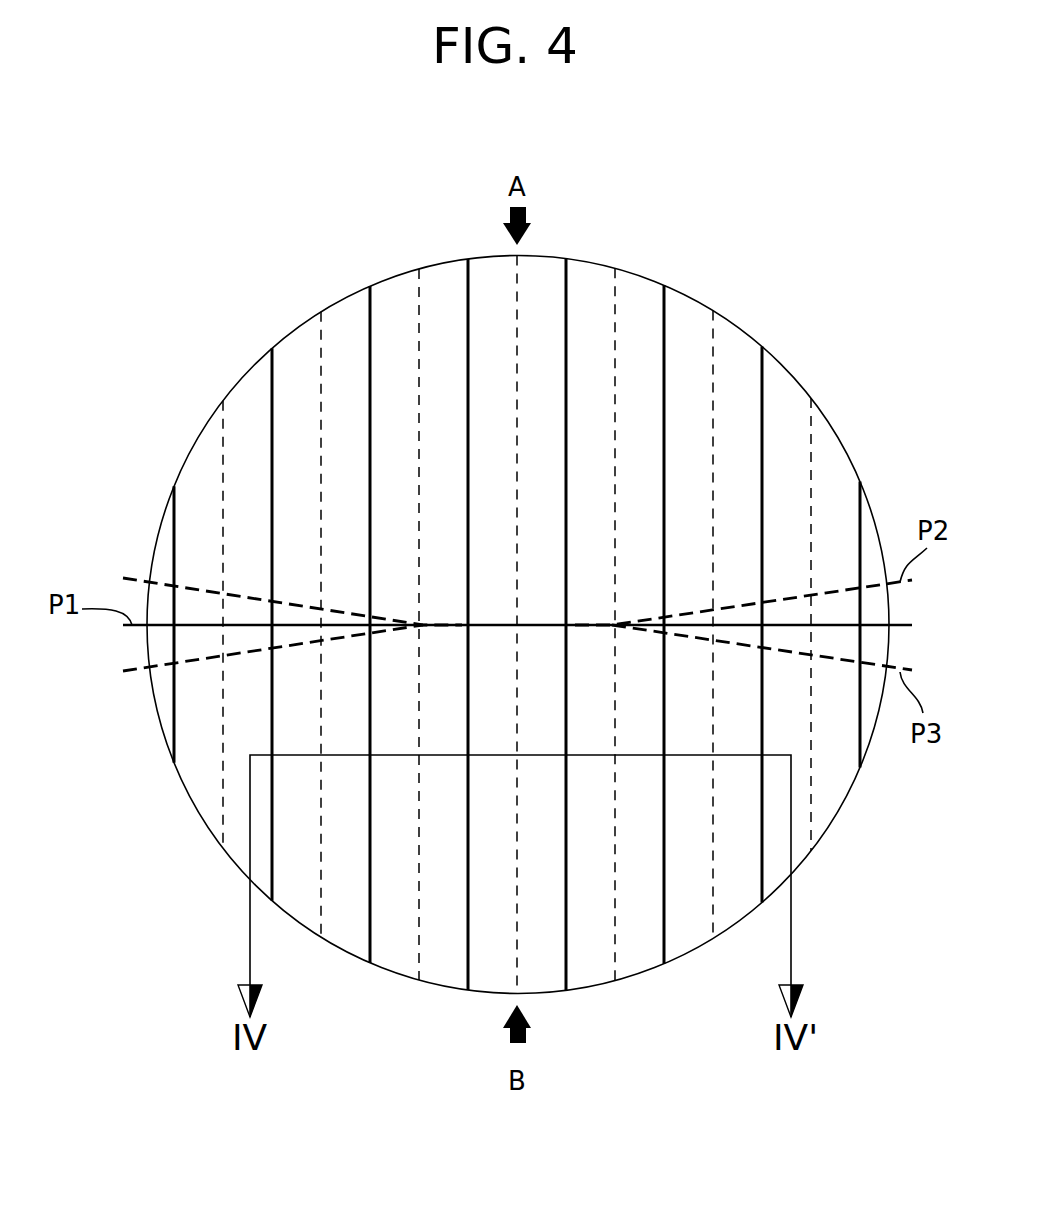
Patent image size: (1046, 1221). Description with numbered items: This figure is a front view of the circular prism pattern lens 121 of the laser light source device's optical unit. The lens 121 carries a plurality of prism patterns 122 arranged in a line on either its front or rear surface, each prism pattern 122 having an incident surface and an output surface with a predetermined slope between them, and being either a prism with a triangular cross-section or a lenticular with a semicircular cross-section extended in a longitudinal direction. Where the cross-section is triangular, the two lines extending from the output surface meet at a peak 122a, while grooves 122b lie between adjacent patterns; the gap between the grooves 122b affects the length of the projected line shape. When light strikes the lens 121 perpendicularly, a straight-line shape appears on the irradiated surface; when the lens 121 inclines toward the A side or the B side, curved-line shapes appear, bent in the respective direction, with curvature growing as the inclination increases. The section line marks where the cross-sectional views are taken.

The prism pattern lens 121 is at (693, 297).
The prism pattern 122 is at (476, 593).
The peak 122a is at (272, 393).
The grooves 122b is at (320, 348).